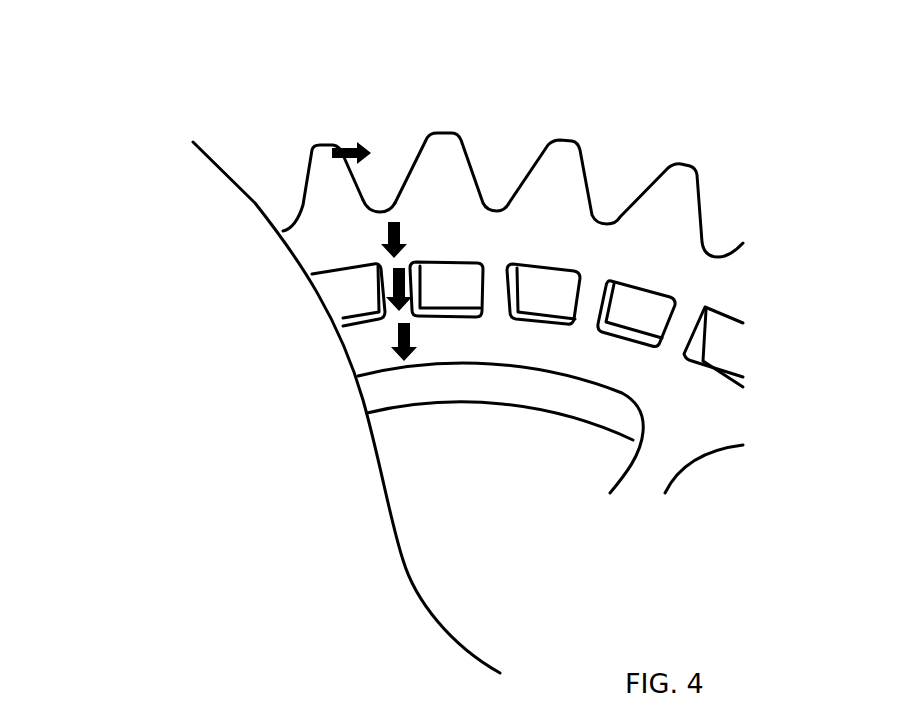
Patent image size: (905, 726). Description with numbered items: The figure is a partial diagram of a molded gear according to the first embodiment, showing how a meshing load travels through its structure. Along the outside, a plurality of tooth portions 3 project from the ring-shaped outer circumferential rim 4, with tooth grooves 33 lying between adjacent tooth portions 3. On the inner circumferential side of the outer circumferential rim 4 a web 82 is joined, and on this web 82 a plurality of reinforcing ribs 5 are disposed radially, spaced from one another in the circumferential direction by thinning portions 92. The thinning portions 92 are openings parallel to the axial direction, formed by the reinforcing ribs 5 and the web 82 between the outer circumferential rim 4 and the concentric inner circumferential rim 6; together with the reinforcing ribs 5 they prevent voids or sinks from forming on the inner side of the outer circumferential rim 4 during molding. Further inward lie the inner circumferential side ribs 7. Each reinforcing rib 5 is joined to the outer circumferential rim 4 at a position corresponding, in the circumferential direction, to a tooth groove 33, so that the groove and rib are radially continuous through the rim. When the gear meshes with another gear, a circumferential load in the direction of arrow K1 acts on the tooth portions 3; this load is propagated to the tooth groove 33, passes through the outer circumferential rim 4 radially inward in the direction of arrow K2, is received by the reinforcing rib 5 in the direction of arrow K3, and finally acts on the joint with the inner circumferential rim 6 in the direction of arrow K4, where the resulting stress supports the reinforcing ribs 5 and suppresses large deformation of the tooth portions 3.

The tooth portions 3 is at (338, 173).
The tooth grooves 33 is at (393, 210).
The outer circumferential rim 4 is at (433, 246).
The reinforcing ribs 5 is at (381, 299).
The inner circumferential rim 6 is at (452, 352).
The inner circumferential side ribs 7 is at (643, 482).
The web 82 is at (450, 312).
The thinning portions 92 is at (450, 290).
The arrow K1 is at (352, 147).
The arrow K2 is at (390, 229).
The arrow K3 is at (378, 266).
The arrow K4 is at (397, 352).